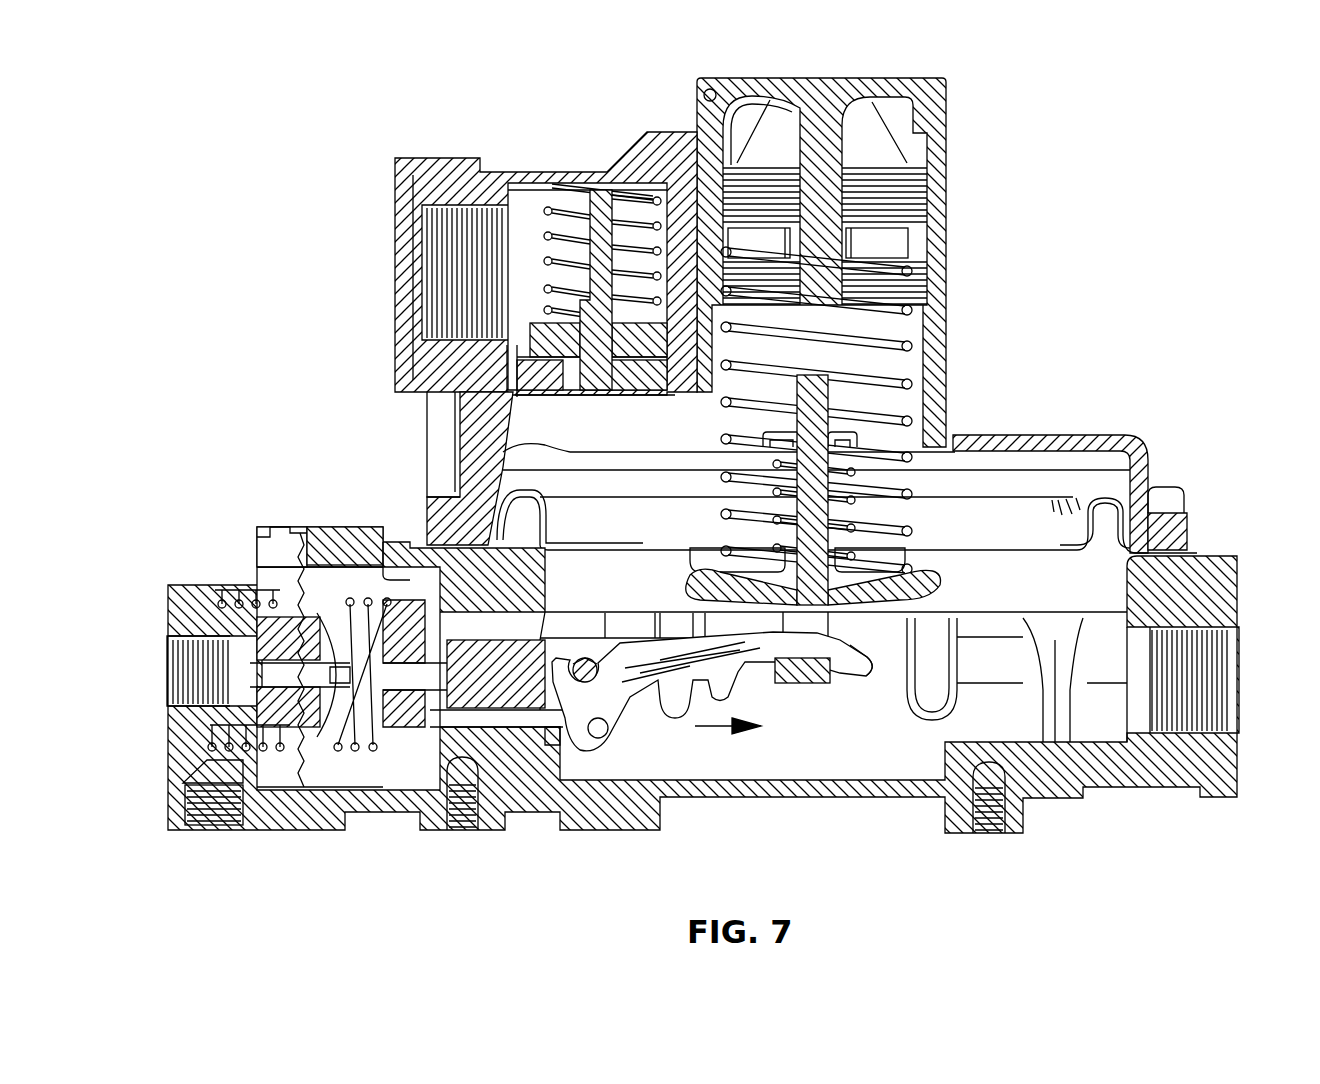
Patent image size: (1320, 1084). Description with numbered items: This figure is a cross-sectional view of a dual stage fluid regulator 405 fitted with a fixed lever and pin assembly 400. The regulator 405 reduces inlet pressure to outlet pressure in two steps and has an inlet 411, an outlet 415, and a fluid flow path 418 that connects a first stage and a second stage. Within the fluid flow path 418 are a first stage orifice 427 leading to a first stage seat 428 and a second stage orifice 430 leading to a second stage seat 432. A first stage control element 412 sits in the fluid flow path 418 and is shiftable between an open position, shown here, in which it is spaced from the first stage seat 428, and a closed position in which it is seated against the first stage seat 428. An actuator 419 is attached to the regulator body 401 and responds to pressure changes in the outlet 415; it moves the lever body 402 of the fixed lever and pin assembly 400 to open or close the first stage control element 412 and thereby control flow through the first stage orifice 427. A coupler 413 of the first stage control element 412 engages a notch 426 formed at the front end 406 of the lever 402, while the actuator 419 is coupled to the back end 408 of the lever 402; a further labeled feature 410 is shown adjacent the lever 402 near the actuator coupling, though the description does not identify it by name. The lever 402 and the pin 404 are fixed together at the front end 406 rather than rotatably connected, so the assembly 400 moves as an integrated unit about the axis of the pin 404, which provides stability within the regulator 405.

The fixed lever and pin assembly 400 is at (553, 762).
The regulator body 401 is at (860, 790).
The lever body 402 is at (676, 682).
The pin 404 is at (599, 738).
The dual stage fluid regulator 405 is at (1184, 199).
The front end 406 is at (567, 660).
The back end 408 is at (858, 662).
The valve seat 410 is at (745, 658).
The inlet 411 is at (170, 676).
The first stage control element 412 is at (507, 690).
The coupler 413 is at (606, 652).
The outlet 415 is at (1236, 687).
The fluid flow path 418 is at (710, 727).
The actuator 419 is at (958, 490).
The notch 426 is at (588, 657).
The first stage orifice 427 is at (372, 728).
The first stage seat 428 is at (447, 735).
The second stage orifice 430 is at (263, 678).
The second stage seat 432 is at (346, 665).